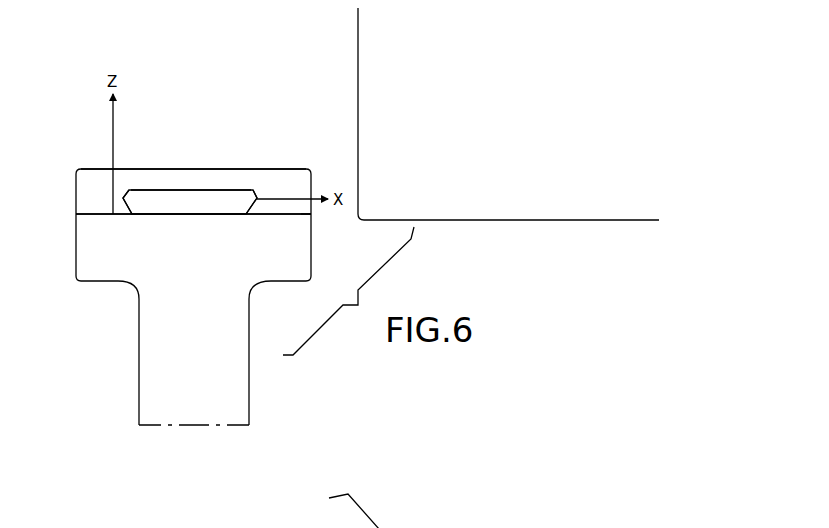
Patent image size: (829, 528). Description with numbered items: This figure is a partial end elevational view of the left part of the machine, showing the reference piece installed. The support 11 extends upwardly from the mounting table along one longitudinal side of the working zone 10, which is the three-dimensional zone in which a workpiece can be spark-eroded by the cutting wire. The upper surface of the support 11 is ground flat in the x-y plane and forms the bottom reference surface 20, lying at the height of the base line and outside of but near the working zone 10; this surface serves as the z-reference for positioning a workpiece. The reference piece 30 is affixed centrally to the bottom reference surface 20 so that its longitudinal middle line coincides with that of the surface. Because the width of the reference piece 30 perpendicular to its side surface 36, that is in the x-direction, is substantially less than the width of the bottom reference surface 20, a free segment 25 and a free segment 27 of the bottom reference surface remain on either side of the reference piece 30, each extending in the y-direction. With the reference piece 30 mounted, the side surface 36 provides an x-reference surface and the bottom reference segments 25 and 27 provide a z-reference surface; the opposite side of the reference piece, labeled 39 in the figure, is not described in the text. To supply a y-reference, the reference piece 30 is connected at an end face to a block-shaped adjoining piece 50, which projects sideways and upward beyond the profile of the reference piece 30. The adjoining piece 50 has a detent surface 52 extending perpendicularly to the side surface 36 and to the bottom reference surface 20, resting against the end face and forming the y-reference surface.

The working zone 10 is at (362, 81).
The support 11 is at (147, 355).
The bottom reference surface 20 is at (100, 210).
The bottom reference segment 25 is at (80, 211).
The bottom reference segment 27 is at (305, 213).
The reference piece 30 is at (234, 186).
The side surface 36 is at (257, 194).
The insert side edge 39 is at (123, 200).
The adjoining piece 50 is at (161, 154).
The detent surface 52 is at (207, 180).